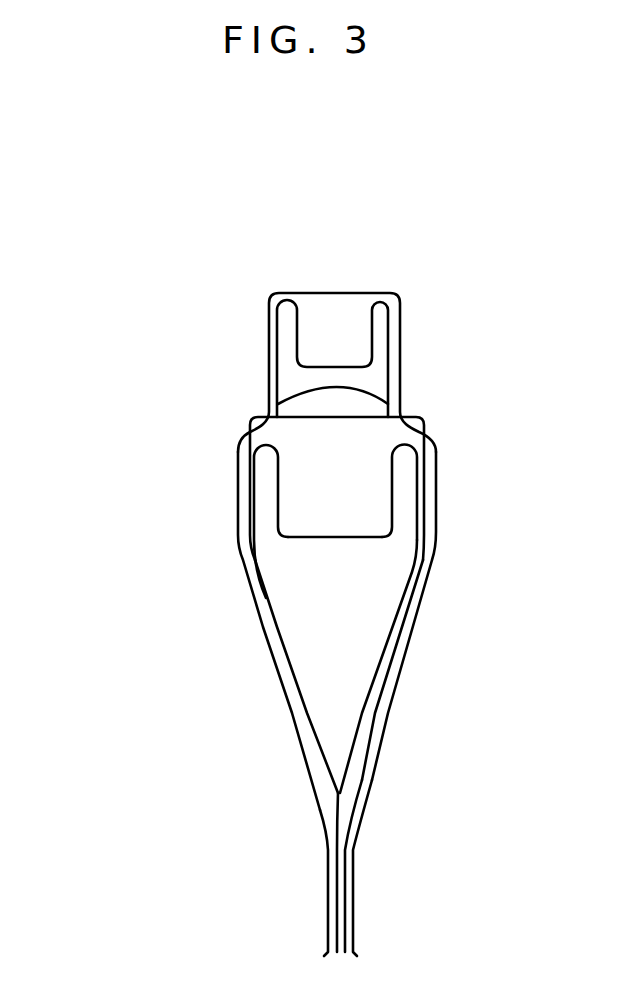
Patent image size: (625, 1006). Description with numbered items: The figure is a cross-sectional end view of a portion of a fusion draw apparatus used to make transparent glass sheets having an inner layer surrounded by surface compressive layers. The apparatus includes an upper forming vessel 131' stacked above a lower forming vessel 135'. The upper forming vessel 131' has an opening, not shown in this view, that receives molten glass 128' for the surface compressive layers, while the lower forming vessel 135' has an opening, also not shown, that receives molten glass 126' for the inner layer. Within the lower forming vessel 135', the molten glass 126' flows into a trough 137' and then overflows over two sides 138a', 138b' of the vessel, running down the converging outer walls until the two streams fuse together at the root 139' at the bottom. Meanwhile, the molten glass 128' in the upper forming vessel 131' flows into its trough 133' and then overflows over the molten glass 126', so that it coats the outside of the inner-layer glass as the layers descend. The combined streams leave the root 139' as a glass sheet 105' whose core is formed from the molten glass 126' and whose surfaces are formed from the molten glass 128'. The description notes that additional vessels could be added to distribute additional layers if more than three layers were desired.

The glass sheet 105' is at (432, 868).
The molten glass for inner layer 126' is at (427, 501).
The molten glass for surface compressive layers 128' is at (417, 344).
The upper forming vessel 131' is at (252, 372).
The trough 133' is at (409, 360).
The lower forming vessel 135' is at (226, 493).
The trough 137' is at (423, 499).
The side 138a' is at (388, 631).
The side 138b' is at (449, 622).
The root 139' is at (425, 843).